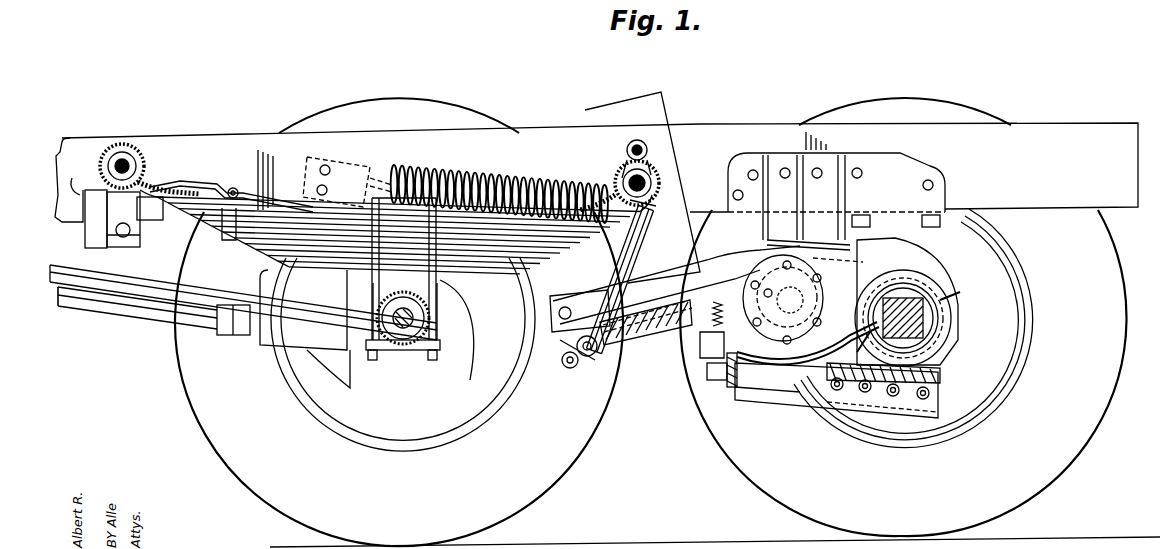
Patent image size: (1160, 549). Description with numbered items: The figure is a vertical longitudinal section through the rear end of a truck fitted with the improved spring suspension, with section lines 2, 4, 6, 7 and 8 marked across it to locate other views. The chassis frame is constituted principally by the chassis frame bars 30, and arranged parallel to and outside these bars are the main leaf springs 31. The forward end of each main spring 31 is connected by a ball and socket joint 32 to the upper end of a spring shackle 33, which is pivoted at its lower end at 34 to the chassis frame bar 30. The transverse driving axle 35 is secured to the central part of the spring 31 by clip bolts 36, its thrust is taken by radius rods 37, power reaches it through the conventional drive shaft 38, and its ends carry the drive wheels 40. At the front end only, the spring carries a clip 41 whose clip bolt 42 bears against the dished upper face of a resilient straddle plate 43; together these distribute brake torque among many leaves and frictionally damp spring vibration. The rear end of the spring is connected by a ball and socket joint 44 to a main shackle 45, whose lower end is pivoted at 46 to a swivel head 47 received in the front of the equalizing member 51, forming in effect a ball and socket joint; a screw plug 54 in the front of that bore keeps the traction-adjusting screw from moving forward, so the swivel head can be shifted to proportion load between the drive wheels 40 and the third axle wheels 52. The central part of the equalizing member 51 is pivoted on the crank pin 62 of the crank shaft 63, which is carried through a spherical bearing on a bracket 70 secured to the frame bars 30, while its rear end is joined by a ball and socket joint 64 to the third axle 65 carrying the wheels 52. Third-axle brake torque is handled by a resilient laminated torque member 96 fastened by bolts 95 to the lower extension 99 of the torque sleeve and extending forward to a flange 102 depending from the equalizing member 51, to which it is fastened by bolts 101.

The section line 2- 2 is at (121, 125).
The section line 4- 4 is at (712, 372).
The section line 6- 6 is at (900, 130).
The section line 7- 7 is at (801, 130).
The section line 8- 8 is at (607, 265).
The chassis frame bars 30 is at (1068, 124).
The main leaf springs 31 is at (273, 210).
The ball and socket joint 32 is at (132, 148).
The spring shackle 33 is at (84, 205).
The pivot 34 is at (108, 232).
The driving axle 35 is at (404, 330).
The clip bolts 36 is at (432, 314).
The radius rods 37 is at (290, 310).
The drive shaft 38 is at (104, 306).
The drive wheels 40 is at (188, 392).
The clip 41 is at (230, 240).
The clip bolt 42 is at (248, 186).
The resilient straddle plate 43 is at (205, 182).
The ball and socket joint 44 is at (612, 173).
The main shackle 45 is at (637, 259).
The pivot 46 is at (612, 352).
The swivel head 47 is at (562, 356).
The equalizing member 51 is at (696, 300).
The third axle wheels 52 is at (1078, 452).
The screw plug 54 is at (563, 300).
The crank pin 62 is at (748, 302).
The crank shaft 63 is at (808, 309).
The ball and socket joint 64 is at (912, 282).
The third axle 65 is at (936, 332).
The bracket 70 is at (872, 168).
The bolts 95 is at (892, 398).
The torque member 96 is at (767, 380).
The lower extension 99 is at (843, 402).
The bolts 101 is at (740, 373).
The flange 102 is at (733, 385).